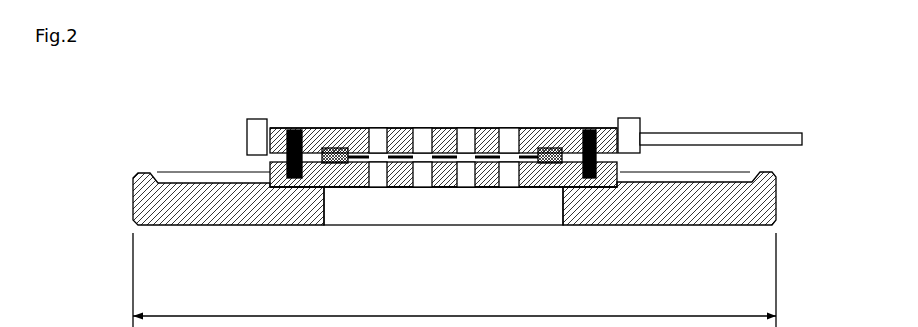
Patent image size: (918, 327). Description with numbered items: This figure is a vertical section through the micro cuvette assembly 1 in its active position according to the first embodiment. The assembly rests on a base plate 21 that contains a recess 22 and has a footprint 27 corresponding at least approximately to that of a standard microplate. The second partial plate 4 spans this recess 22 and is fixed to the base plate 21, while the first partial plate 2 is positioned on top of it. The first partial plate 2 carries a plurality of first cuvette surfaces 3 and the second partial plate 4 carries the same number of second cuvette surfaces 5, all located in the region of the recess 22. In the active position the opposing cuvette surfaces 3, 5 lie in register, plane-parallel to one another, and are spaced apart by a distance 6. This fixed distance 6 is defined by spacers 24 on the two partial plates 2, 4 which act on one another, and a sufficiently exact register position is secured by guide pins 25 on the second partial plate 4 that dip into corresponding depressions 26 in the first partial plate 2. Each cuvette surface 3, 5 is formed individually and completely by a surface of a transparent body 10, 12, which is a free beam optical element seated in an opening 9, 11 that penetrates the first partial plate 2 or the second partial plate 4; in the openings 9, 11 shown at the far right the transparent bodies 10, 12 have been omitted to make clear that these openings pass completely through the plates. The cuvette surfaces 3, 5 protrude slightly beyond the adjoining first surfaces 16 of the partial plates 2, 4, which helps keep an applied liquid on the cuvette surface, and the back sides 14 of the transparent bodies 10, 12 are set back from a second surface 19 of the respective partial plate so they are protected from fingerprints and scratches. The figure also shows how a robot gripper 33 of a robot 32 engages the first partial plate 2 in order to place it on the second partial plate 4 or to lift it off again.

The micro cuvette assembly 1 is at (152, 147).
The first partial plate 2 is at (315, 128).
The first cuvette surfaces 3 is at (378, 158).
The second partial plate 4 is at (343, 165).
The second cuvette surfaces 5 is at (418, 157).
The distance 6 is at (443, 163).
The opening 9 is at (508, 140).
The transparent body 10 is at (423, 135).
The opening 11 is at (509, 177).
The transparent body 12 is at (464, 172).
The back sides 14 is at (468, 127).
The first surfaces 16 is at (487, 157).
The second surface 19 is at (553, 127).
The base plate 21 is at (643, 203).
The recess 22 is at (420, 214).
The spacers 24 is at (340, 148).
The guide pins 25 is at (600, 128).
The depressions 26 is at (283, 130).
The footprint 27 is at (454, 280).
The robot 32 is at (738, 140).
The robot gripper 33 is at (255, 130).